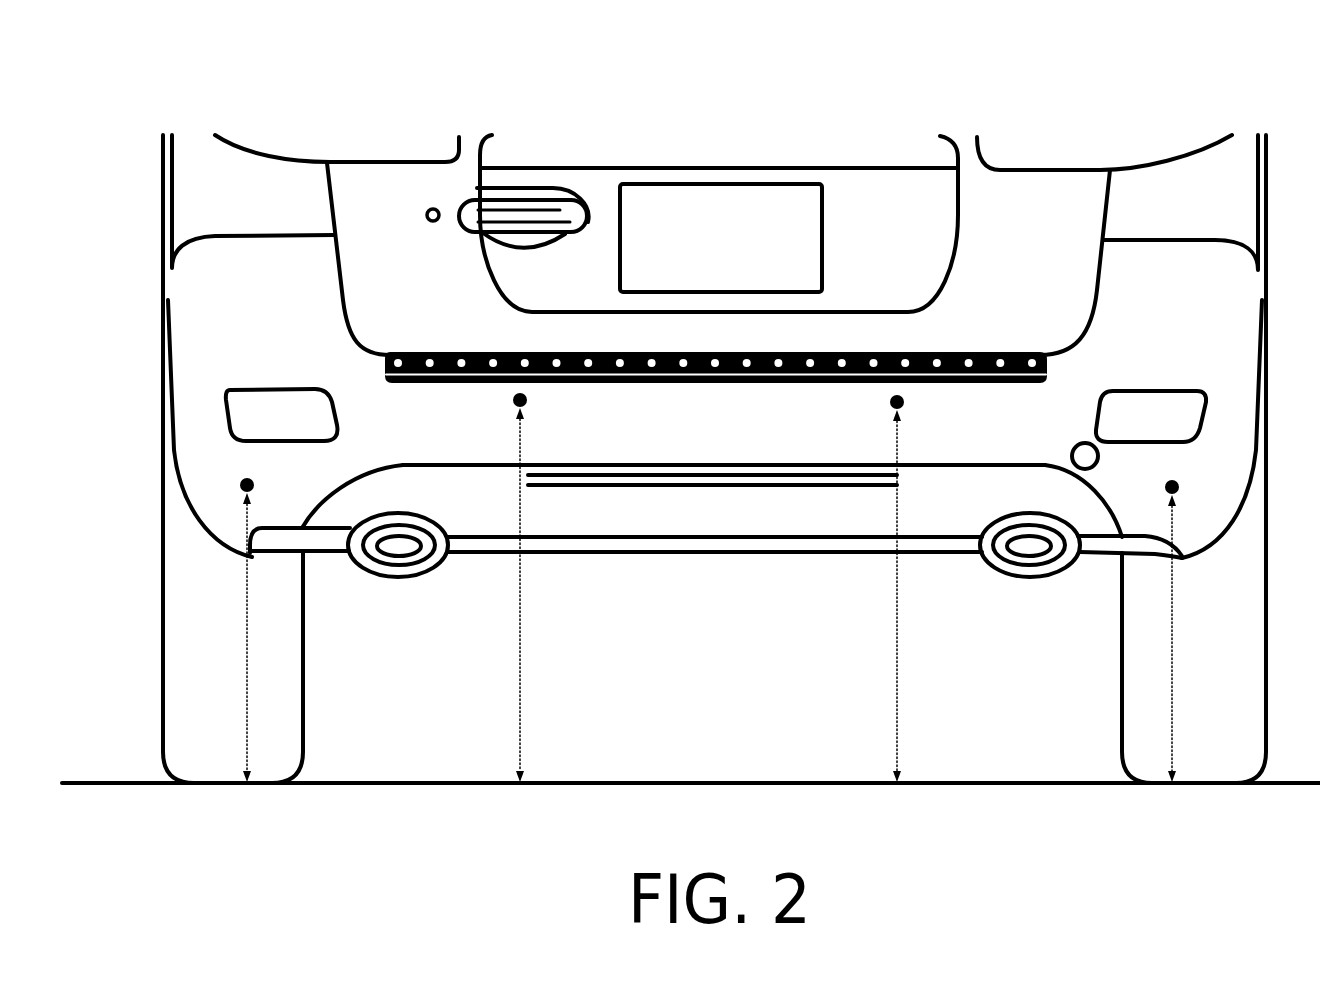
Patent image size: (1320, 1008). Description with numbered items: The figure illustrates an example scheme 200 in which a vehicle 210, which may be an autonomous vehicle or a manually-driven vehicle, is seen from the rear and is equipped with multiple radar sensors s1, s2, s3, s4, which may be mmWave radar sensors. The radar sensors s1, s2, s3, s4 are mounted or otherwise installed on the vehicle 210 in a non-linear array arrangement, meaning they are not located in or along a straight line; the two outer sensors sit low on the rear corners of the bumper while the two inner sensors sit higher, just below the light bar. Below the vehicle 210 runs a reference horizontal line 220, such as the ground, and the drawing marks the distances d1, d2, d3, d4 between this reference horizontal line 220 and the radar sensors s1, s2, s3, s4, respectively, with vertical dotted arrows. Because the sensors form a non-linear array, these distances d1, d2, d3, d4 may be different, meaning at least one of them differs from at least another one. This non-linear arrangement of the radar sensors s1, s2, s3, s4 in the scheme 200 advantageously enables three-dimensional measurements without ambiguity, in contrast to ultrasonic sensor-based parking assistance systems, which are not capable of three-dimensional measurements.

The scheme 200 is at (714, 45).
The vehicle 210 is at (1030, 126).
The reference horizontal line 220 is at (411, 787).
The radar sensor s1 is at (265, 486).
The radar sensor s2 is at (539, 401).
The radar sensor s3 is at (916, 402).
The radar sensor s4 is at (1190, 487).
The distance d1 is at (231, 637).
The distance d2 is at (504, 595).
The distance d3 is at (881, 596).
The distance d4 is at (1190, 638).